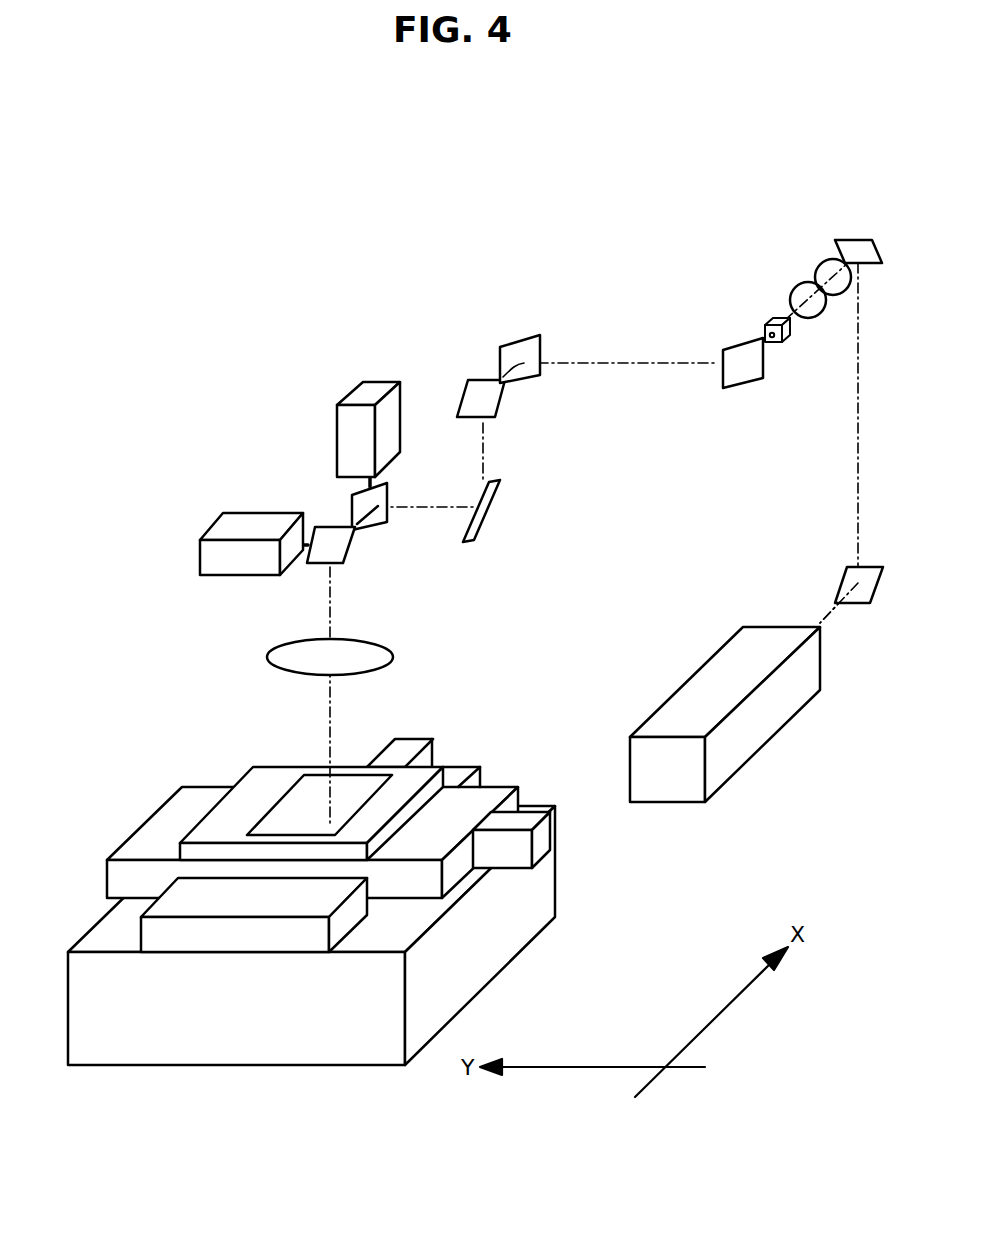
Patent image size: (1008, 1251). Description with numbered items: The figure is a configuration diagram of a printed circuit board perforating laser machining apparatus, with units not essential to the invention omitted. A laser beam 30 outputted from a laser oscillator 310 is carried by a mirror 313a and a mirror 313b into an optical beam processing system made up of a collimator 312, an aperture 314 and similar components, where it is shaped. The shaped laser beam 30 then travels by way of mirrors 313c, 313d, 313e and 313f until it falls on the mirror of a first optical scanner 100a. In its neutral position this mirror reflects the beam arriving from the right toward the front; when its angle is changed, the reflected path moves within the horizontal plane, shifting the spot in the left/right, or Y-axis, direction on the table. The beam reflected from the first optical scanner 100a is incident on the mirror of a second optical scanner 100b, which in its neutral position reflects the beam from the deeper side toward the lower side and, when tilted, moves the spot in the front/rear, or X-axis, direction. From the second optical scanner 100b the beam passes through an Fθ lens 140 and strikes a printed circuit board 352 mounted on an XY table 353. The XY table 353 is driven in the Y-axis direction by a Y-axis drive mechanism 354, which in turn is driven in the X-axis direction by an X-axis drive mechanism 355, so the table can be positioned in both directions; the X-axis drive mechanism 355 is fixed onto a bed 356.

The laser beam 30 is at (817, 620).
The first optical scanner 100a is at (347, 396).
The second optical scanner 100b is at (252, 513).
The Fθ lens 140 is at (268, 657).
The laser oscillator 310 is at (752, 758).
The collimator 312 is at (835, 303).
The mirror 313a is at (840, 573).
The mirror 313b is at (857, 238).
The mirror 313c is at (743, 388).
The mirror 313d is at (521, 342).
The mirror 313e is at (480, 380).
The mirror 313f is at (492, 505).
The aperture 314 is at (777, 320).
The printed circuit board 352 is at (296, 795).
The XY table 353 is at (413, 778).
The Y-axis drive mechanism 354 is at (525, 817).
The X-axis drive mechanism 355 is at (418, 738).
The bed 356 is at (158, 1050).